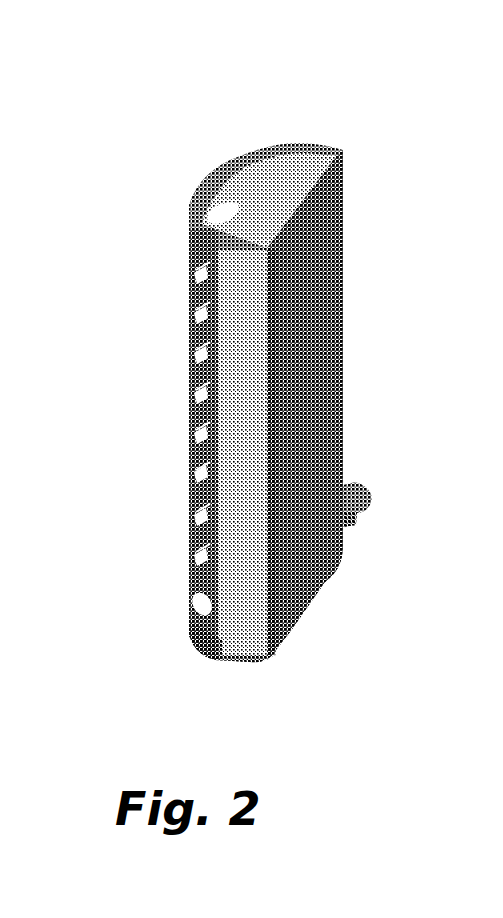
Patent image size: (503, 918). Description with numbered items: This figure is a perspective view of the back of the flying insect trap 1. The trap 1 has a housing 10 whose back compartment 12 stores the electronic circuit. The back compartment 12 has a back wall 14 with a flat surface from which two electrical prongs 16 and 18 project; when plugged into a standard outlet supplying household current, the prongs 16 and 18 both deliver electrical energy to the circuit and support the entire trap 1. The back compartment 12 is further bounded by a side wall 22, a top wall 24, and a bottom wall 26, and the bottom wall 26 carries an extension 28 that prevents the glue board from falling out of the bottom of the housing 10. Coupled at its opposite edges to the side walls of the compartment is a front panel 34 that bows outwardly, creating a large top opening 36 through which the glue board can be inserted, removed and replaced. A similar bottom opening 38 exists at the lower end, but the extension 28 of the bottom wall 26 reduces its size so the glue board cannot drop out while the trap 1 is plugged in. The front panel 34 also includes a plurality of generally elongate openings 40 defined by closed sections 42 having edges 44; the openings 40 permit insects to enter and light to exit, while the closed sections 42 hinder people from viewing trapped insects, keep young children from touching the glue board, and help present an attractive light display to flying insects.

The flying insect trap 1 is at (264, 408).
The housing 10 is at (264, 408).
The back compartment 12 is at (352, 234).
The back wall 14 is at (280, 430).
The electrical prong 16 is at (357, 513).
The electrical prong 18 is at (407, 527).
The side wall 22 is at (245, 545).
The top wall 24 is at (303, 168).
The bottom wall 26 is at (243, 665).
The extension 28 is at (215, 660).
The front panel 34 is at (124, 426).
The top opening 36 is at (222, 207).
The bottom opening 38 is at (196, 596).
The openings 40 is at (212, 272).
The closed sections 42 is at (195, 280).
The edges 44 is at (192, 482).